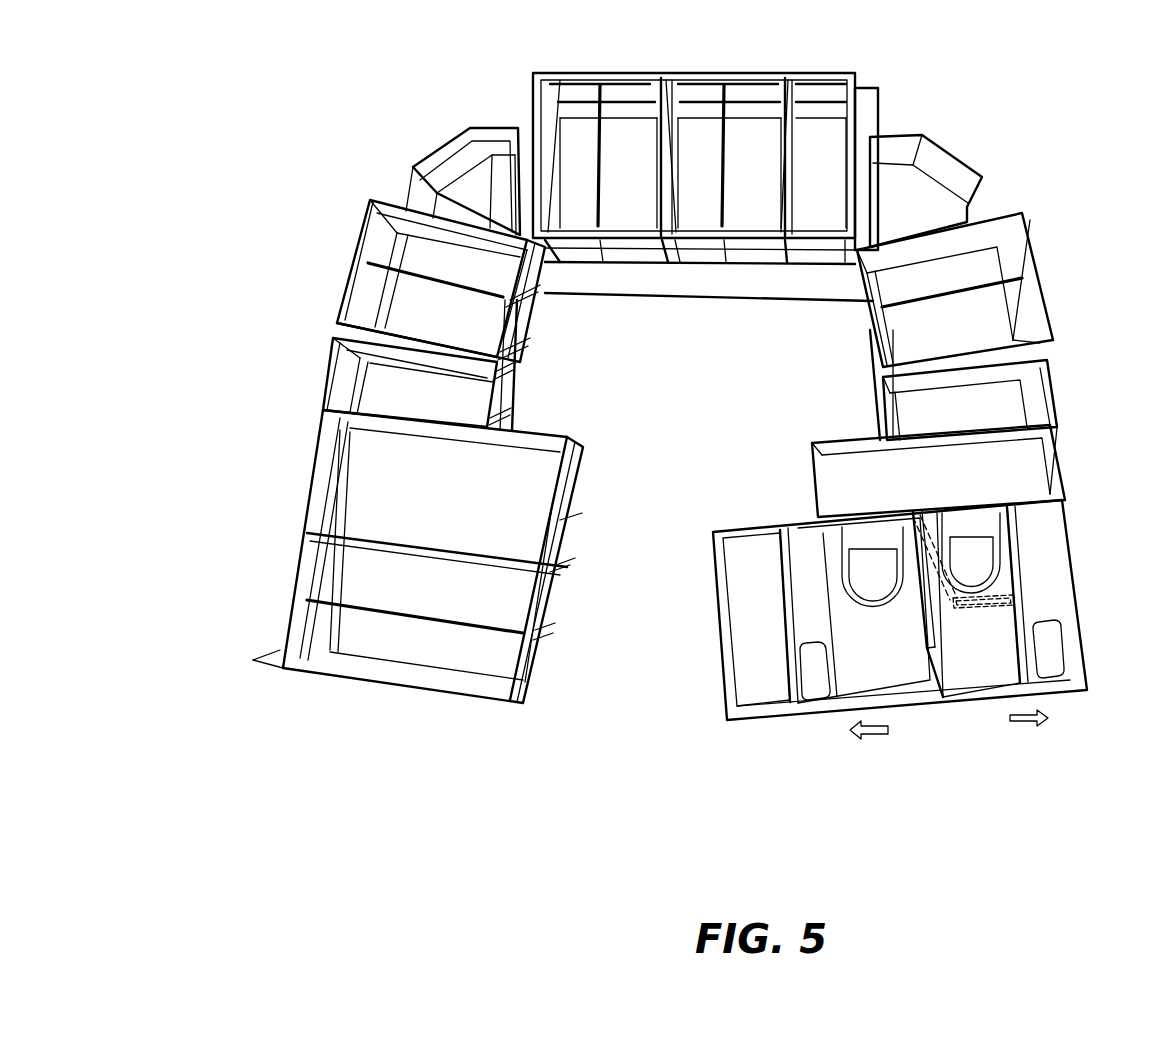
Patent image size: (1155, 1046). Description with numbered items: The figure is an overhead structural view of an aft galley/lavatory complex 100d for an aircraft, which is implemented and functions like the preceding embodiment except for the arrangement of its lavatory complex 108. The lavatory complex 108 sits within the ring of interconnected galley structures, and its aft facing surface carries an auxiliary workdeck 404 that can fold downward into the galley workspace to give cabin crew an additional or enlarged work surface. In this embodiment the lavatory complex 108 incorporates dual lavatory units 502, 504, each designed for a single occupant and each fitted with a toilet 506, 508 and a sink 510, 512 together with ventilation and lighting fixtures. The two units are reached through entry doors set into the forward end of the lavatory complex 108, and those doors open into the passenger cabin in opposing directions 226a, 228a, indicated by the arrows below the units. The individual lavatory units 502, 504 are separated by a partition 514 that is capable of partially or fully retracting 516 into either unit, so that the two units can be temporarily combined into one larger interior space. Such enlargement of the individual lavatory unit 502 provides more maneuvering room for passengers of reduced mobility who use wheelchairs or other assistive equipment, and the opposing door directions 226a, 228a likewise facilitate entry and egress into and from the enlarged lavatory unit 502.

The aft galley/lavatory complex 100d is at (319, 134).
The auxiliary workdeck 404 is at (647, 302).
The lavatory complex 108 is at (749, 527).
The individual lavatory unit 502 is at (870, 642).
The individual lavatory unit 504 is at (985, 633).
The toilet 506 is at (872, 560).
The toilet 508 is at (978, 558).
The sink 510 is at (815, 672).
The sink 512 is at (1048, 645).
The partition 514 is at (928, 648).
The retracting of the partition 516 is at (970, 607).
The opening direction of entry door 226a is at (873, 738).
The opening direction of entry door 228a is at (1027, 730).